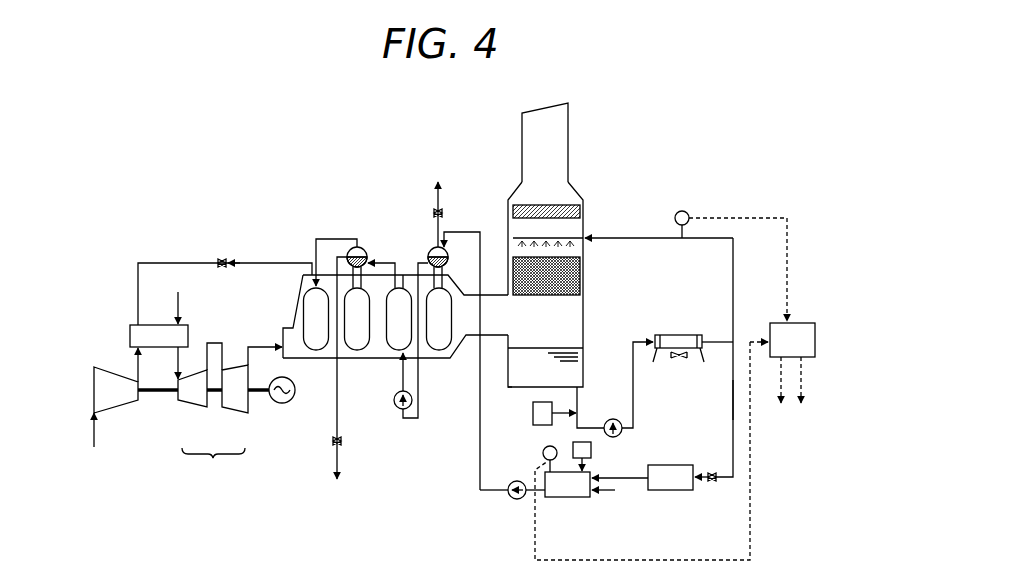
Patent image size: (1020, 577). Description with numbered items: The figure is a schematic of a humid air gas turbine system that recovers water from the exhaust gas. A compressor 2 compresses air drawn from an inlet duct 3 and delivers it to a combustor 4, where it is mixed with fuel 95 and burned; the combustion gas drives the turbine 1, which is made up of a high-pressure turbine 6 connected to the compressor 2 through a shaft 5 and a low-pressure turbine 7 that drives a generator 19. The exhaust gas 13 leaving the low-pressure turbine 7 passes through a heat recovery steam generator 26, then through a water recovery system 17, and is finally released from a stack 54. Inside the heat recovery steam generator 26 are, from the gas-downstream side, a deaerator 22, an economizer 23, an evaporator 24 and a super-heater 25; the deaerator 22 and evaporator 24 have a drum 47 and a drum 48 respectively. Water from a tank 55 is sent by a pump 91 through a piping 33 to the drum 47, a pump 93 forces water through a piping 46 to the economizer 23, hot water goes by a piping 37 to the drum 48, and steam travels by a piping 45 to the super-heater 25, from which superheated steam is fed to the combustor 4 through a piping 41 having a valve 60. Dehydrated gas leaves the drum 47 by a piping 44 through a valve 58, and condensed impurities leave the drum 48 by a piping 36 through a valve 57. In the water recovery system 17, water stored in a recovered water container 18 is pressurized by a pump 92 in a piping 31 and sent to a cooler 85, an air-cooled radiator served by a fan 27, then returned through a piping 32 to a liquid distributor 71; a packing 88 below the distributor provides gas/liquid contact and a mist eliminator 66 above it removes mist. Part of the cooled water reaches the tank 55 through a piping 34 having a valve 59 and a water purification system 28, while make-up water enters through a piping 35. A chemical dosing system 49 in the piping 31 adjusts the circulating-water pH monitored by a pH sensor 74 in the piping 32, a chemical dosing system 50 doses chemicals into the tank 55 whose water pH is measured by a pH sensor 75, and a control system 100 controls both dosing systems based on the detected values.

The turbine 1 is at (213, 464).
The compressor 2 is at (112, 414).
The inlet duct 3 is at (90, 440).
The combustor 4 is at (189, 330).
The shaft 5 is at (160, 394).
The high-pressure turbine 6 is at (195, 408).
The low-pressure turbine 7 is at (234, 408).
The exhaust gas 13 is at (262, 346).
The water recovery system 17 is at (583, 322).
The recovered water container 18 is at (508, 388).
The generator 19 is at (279, 404).
The deaerator 22 is at (440, 351).
The economizer 23 is at (396, 351).
The evaporator 24 is at (356, 351).
The super-heater 25 is at (314, 351).
The heat recovery steam generator 26 is at (298, 300).
The fan 27 is at (677, 360).
The water purification system 28 is at (672, 491).
The piping 31 is at (635, 414).
The piping 32 is at (733, 268).
The piping 33 is at (483, 494).
The piping 34 is at (733, 400).
The piping 35 is at (610, 492).
The piping 36 is at (336, 432).
The piping 37 is at (380, 262).
The piping 41 is at (257, 262).
The piping 44 is at (433, 200).
The piping 45 is at (335, 238).
The piping 46 is at (420, 395).
The drum 47 is at (432, 248).
The drum 48 is at (358, 246).
The chemical dosing system 49 is at (534, 424).
The chemical dosing system 50 is at (592, 452).
The stack 54 is at (568, 152).
The tank 55 is at (568, 498).
The valve 57 is at (333, 444).
The valve 58 is at (442, 214).
The valve 59 is at (712, 482).
The valve 60 is at (221, 258).
The mist eliminator 66 is at (583, 211).
The liquid distributor 71 is at (514, 236).
The pH sensor 74 is at (686, 211).
The pH sensor 75 is at (543, 455).
The cooler 85 is at (677, 334).
The packing 88 is at (583, 273).
The pump 91 is at (517, 500).
The pump 92 is at (613, 419).
The pump 93 is at (398, 410).
The fuel 95 is at (180, 294).
The control system 100 is at (798, 322).